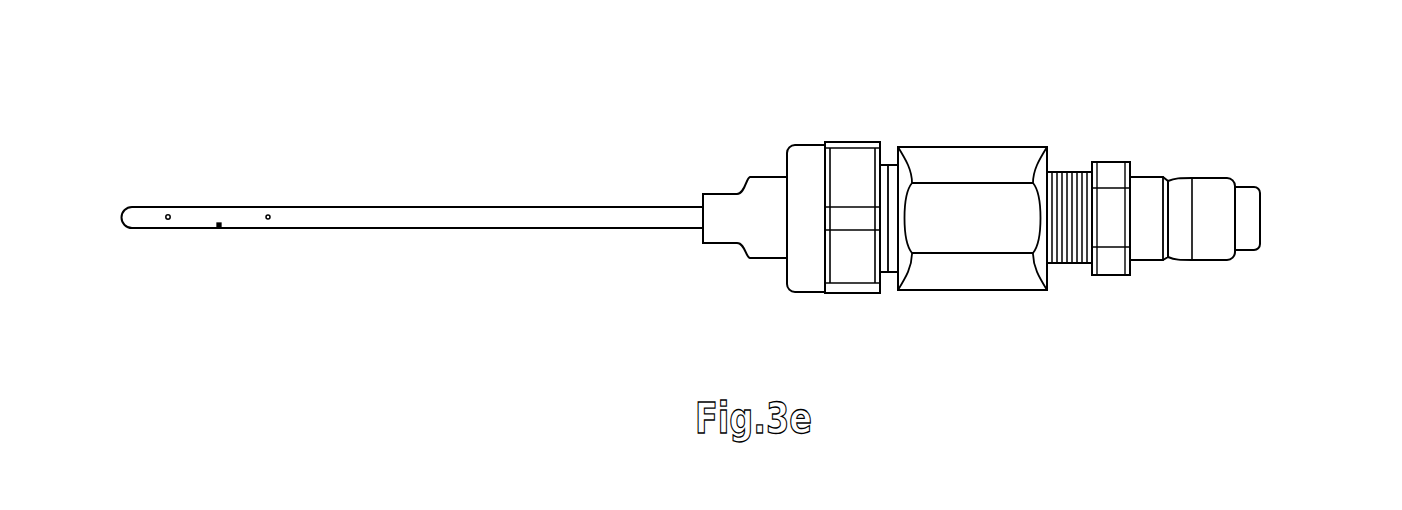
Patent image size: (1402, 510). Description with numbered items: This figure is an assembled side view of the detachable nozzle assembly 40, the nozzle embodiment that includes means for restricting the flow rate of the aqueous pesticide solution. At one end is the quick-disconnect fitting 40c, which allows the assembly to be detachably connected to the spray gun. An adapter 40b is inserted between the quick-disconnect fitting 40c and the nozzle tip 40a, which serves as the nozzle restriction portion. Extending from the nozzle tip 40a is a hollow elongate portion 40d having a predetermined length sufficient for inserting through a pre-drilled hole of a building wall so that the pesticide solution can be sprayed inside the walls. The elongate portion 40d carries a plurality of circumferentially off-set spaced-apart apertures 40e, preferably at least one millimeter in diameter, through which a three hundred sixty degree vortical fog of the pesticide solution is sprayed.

The detachable nozzle assembly 40 is at (1048, 97).
The nozzle tip 40a is at (725, 205).
The adapter 40b is at (967, 278).
The quick-disconnect fitting 40c is at (1213, 190).
The hollow elongate portion 40d is at (352, 207).
The circumferentially off-set spaced-apart apertures 40e is at (168, 217).